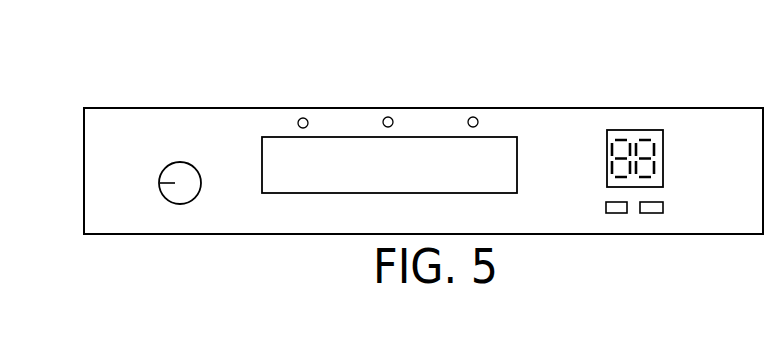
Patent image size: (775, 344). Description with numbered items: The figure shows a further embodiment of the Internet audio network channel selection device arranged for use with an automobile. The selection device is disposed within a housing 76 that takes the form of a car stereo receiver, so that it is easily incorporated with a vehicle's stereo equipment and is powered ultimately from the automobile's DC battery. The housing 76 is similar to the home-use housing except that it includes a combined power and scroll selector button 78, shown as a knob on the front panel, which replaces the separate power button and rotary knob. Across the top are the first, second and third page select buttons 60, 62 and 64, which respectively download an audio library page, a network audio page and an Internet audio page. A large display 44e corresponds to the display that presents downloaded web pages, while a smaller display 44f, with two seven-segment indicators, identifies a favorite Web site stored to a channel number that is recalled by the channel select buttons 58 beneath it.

The housing 76 is at (188, 84).
The combined power and scroll selector button 78 is at (177, 170).
The first page select button 60 is at (298, 118).
The second page select button 62 is at (383, 117).
The third page select button 64 is at (470, 117).
The electronics display 44e is at (448, 183).
The electronics display 44f is at (651, 136).
The channel select buttons 58 is at (622, 212).